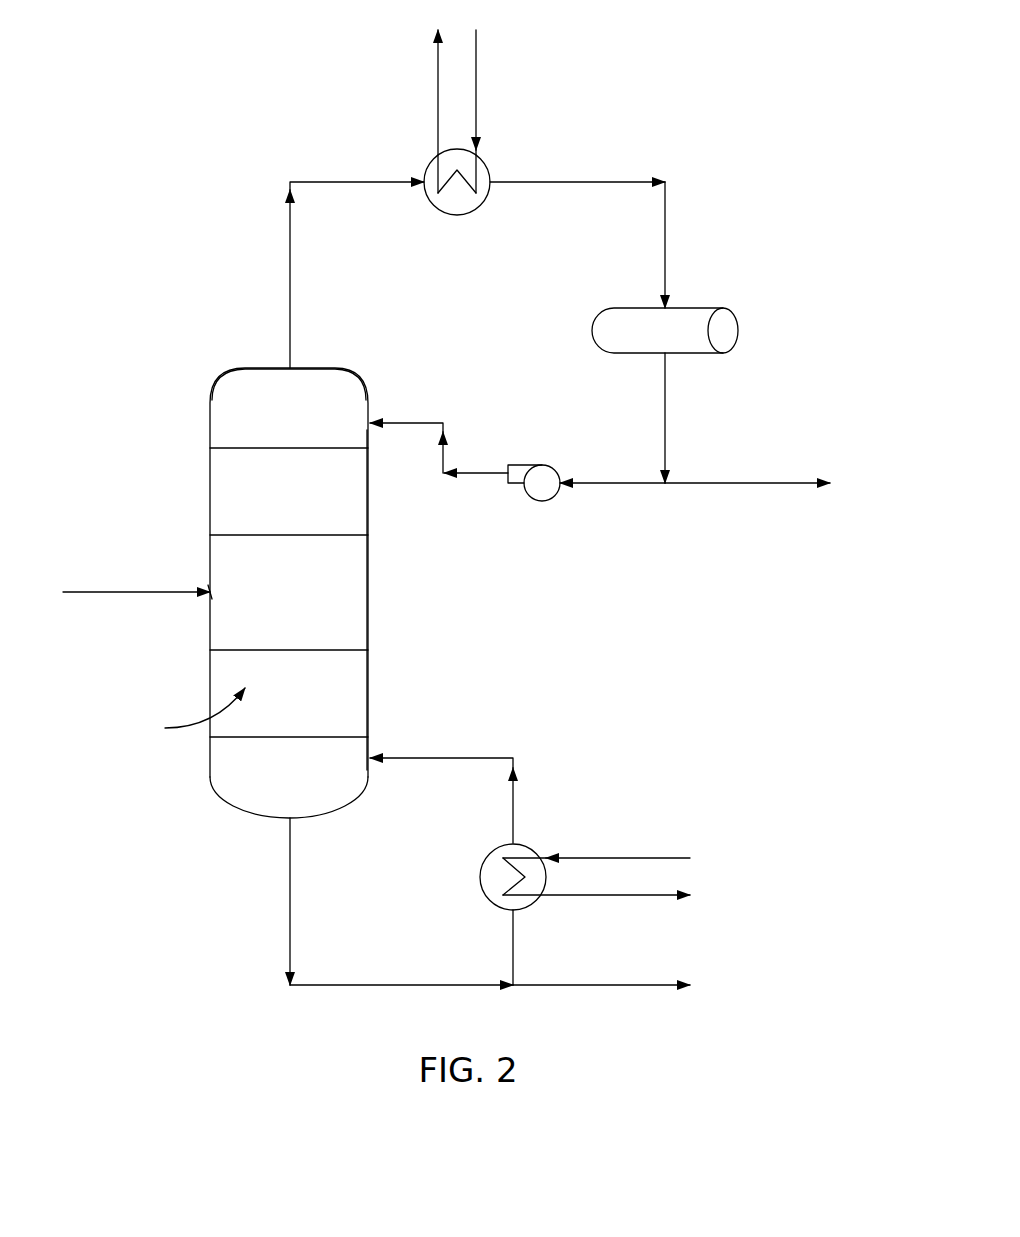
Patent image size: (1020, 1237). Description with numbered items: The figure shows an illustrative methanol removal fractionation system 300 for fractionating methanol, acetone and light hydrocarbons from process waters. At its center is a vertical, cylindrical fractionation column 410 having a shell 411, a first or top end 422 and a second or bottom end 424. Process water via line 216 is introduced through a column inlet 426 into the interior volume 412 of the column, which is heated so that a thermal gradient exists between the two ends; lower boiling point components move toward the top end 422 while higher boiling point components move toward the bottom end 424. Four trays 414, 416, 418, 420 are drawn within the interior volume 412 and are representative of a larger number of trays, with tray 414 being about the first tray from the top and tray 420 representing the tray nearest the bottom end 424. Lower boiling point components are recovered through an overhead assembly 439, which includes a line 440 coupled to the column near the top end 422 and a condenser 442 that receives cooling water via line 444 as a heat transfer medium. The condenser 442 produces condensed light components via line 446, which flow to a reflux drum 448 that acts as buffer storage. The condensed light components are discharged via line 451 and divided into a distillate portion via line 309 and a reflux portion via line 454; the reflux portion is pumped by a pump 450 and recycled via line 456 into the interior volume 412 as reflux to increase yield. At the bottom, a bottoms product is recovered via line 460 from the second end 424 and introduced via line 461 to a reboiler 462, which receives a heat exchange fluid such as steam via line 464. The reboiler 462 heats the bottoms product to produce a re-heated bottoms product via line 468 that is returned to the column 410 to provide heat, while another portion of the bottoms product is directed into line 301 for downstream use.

The methanol removal fractionation system 300 is at (240, 58).
The overhead assembly 439 is at (654, 132).
The fractionation column 410 is at (243, 375).
The shell 411 is at (370, 645).
The interior volume 412 is at (181, 713).
The tray 414 is at (235, 448).
The tray 416 is at (235, 535).
The tray 418 is at (235, 650).
The tray 420 is at (252, 738).
The first end 422 is at (326, 372).
The second end 424 is at (330, 818).
The column inlet 426 is at (212, 592).
The process water line 216 is at (82, 595).
The overhead line 440 is at (322, 178).
The condenser 442 is at (483, 165).
The cooling water line 444 is at (477, 72).
The condensed light components line 446 is at (667, 222).
The reflux drum 448 is at (740, 332).
The discharge line 451 is at (667, 428).
The reflux portion line 454 is at (642, 485).
The distillate portion line 309 is at (761, 485).
The pump 450 is at (542, 501).
The reflux line 456 is at (410, 421).
The bottoms product line 460 is at (290, 908).
The reboiler feed line 461 is at (516, 943).
The reboiler 462 is at (530, 845).
The heat exchange fluid line 464 is at (647, 858).
The re-heated bottoms product line 468 is at (505, 755).
The bottoms product line 301 is at (650, 986).